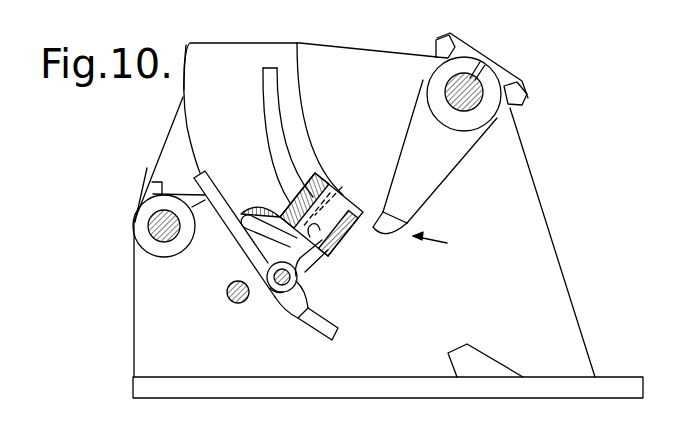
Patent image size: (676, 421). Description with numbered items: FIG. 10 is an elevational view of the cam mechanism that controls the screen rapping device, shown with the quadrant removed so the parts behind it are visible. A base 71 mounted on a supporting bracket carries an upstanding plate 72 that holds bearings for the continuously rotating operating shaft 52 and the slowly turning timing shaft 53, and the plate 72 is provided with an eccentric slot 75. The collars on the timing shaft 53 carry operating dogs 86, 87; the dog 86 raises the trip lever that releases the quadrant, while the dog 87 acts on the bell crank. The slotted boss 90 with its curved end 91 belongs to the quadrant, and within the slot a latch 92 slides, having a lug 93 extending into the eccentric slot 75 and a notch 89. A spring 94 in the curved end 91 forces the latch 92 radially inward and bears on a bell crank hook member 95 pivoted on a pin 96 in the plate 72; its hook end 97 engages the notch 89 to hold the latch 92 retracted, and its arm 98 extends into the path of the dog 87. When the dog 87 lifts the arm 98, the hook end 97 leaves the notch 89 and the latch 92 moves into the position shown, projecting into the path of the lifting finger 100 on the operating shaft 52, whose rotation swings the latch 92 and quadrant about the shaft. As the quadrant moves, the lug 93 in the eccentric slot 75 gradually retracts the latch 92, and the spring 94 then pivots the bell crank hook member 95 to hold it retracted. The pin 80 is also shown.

The operating shaft 52 is at (466, 82).
The timing shaft 53 is at (148, 222).
The base 71 is at (617, 373).
The upstanding plate 72 is at (534, 179).
The eccentric slot 75 is at (277, 113).
The pin 80 is at (227, 297).
The operating dog 86 is at (152, 182).
The operating dog 87 is at (203, 204).
The notch 89 is at (345, 232).
The slotted boss 90 is at (320, 174).
The curved end 91 is at (247, 207).
The latch 92 is at (343, 197).
The lug 93 is at (352, 193).
The spring 94 is at (273, 216).
The bell crank hook member 95 is at (278, 293).
The pin 96 is at (297, 282).
The hook end 97 is at (323, 258).
The arm 98 is at (199, 173).
The lifting finger 100 is at (432, 182).